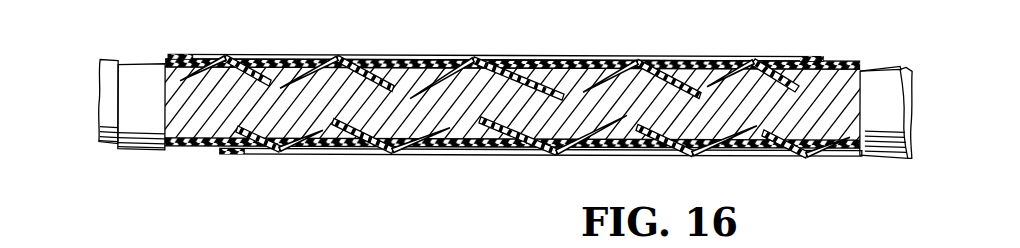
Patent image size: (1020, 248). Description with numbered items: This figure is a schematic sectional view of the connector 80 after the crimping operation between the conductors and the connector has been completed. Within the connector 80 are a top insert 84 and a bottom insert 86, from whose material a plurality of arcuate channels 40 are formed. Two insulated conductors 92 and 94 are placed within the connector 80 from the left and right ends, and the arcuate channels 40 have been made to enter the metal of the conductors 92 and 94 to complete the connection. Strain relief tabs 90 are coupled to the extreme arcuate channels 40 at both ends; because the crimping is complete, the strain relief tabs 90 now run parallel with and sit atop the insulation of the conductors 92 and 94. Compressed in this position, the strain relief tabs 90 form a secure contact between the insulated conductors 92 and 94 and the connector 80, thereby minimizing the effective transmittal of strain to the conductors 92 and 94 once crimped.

The connector 80 is at (614, 45).
The top insert 84 is at (421, 58).
The bottom insert 86 is at (494, 151).
The strain relief tabs 90 is at (197, 43).
The arcuate channels 40 is at (534, 129).
The conductor 92 is at (128, 62).
The conductor 94 is at (894, 153).